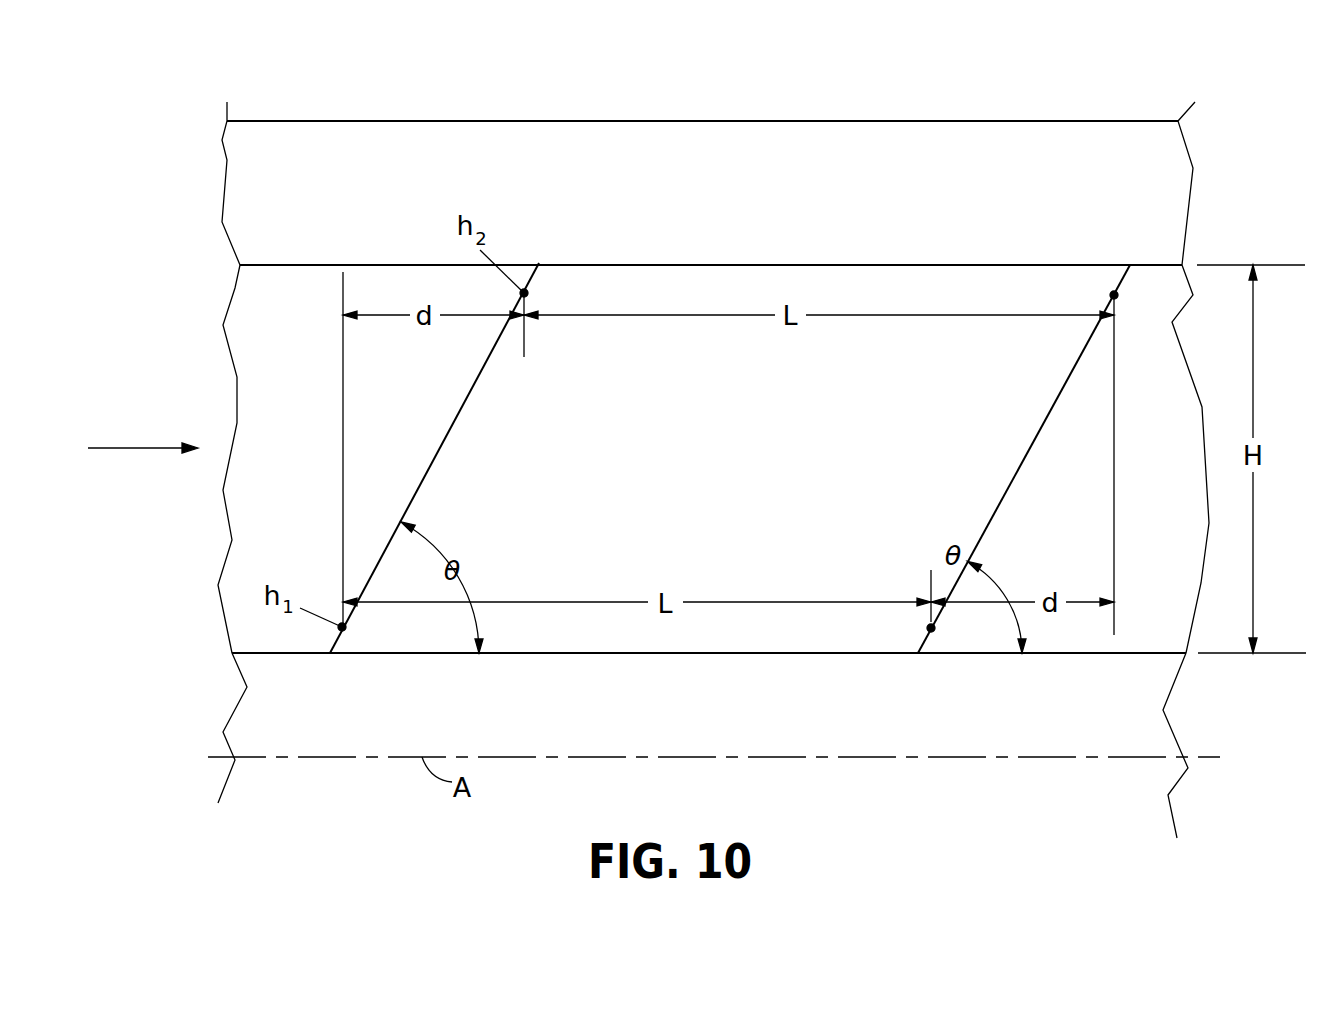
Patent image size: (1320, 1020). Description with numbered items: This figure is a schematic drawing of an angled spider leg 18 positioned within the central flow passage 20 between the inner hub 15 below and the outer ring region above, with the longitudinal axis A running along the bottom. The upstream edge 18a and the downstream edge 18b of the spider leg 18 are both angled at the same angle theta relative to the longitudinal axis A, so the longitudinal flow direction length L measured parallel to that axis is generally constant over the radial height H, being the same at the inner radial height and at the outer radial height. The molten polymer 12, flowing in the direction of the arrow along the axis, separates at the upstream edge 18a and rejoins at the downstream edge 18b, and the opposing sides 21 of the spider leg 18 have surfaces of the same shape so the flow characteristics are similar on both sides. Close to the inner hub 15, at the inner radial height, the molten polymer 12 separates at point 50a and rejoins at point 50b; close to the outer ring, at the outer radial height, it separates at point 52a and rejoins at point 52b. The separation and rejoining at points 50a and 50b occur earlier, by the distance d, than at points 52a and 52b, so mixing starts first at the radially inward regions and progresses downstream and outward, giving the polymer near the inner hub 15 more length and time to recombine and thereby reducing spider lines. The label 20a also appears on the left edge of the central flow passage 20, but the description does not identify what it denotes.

The molten polymer 12 is at (135, 448).
The inner hub 15 is at (250, 702).
The spider leg 18 is at (462, 140).
The upstream edge 18a is at (437, 457).
The downstream edge 18b is at (1024, 462).
The central flow passage 20 is at (250, 287).
The inner surface edge 20a is at (247, 337).
The opposing sides 21 is at (805, 490).
The separation point at radial height h1 50a is at (342, 627).
The rejoining point at radial height h1 50b is at (931, 628).
The separation point at radial height h2 52a is at (524, 293).
The rejoining point at radial height h2 52b is at (1114, 295).